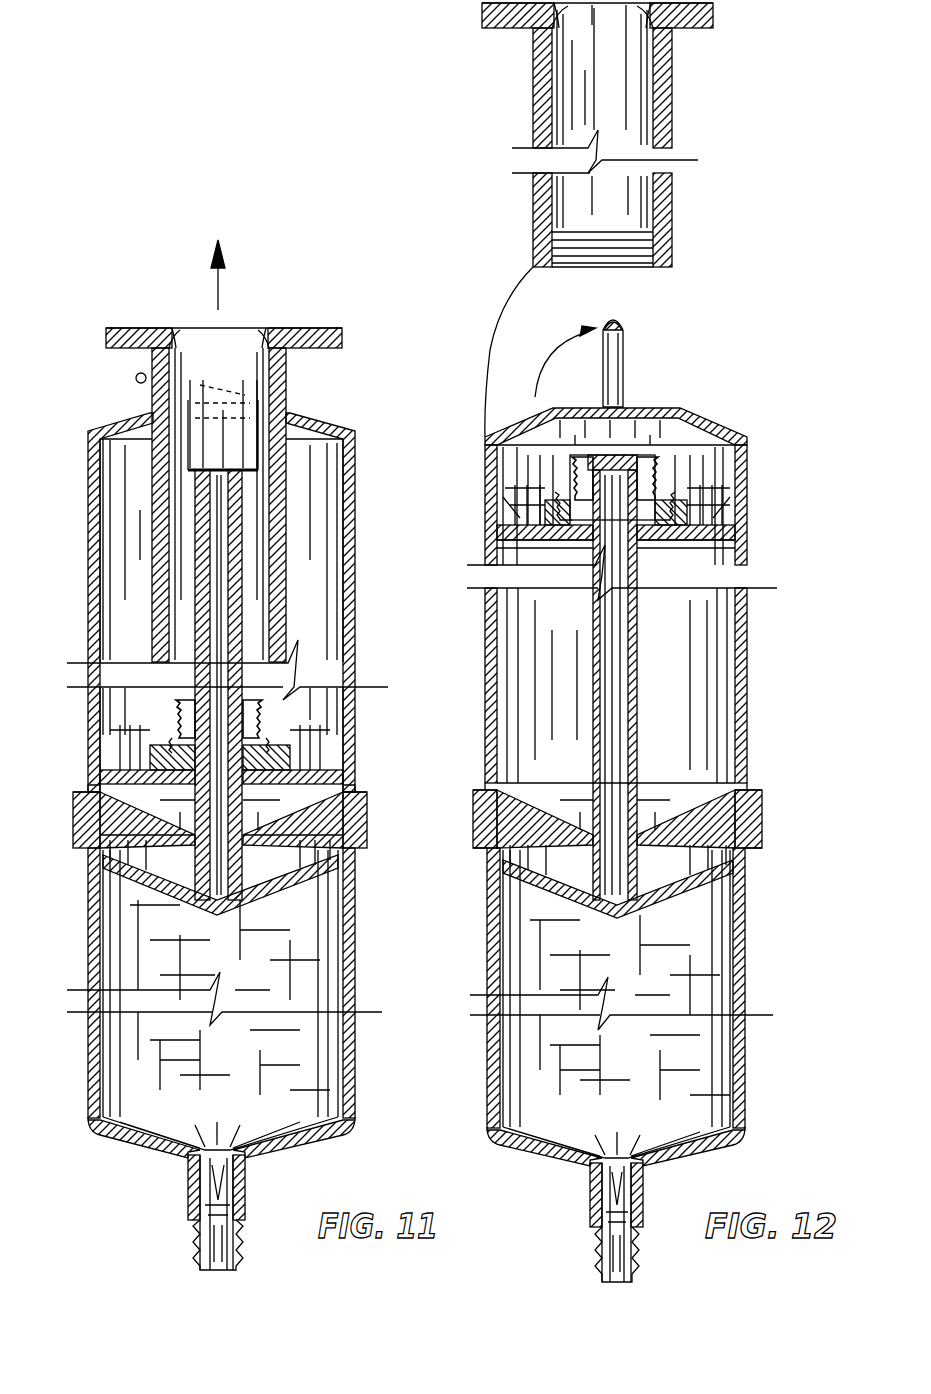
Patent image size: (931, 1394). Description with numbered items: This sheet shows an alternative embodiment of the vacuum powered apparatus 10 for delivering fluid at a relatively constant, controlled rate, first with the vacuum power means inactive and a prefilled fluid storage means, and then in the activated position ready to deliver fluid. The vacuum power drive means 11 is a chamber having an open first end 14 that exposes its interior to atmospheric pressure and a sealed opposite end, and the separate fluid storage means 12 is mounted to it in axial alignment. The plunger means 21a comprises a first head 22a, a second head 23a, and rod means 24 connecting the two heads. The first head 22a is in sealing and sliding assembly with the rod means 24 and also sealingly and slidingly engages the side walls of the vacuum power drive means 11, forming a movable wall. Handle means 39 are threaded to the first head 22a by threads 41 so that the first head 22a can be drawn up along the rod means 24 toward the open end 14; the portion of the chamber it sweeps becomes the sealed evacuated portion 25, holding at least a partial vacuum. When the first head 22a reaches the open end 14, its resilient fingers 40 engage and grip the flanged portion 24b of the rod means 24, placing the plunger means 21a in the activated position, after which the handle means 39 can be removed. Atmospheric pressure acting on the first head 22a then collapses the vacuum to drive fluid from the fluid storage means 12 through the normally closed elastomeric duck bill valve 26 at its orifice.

In FIG. 11, the vacuum powered apparatus 10 is at (90, 413).
In FIG. 12, the vacuum powered apparatus 10 is at (755, 417).
In FIG. 11, the vacuum power drive means 11 is at (356, 568).
In FIG. 12, the vacuum power drive means 11 is at (740, 532).
In FIG. 11, the fluid storage means 12 is at (343, 936).
In FIG. 12, the fluid storage means 12 is at (745, 920).
In FIG. 11, the first end 14 is at (330, 422).
In FIG. 12, the first end 14 is at (702, 422).
In FIG. 11, the plunger means 21a is at (328, 622).
In FIG. 12, the plunger means 21a is at (703, 650).
In FIG. 11, the first head 22a is at (310, 770).
In FIG. 11, the second head 23a is at (338, 832).
In FIG. 12, the second head 23a is at (713, 838).
In FIG. 11, the rod means 24 is at (243, 526).
In FIG. 12, the rod means 24 is at (637, 678).
In FIG. 11, the flanged portion 24b is at (250, 478).
In FIG. 12, the flanged portion 24b is at (562, 478).
In FIG. 12, the sealed evacuated portion 25 is at (680, 716).
In FIG. 11, the duck bill valve 26 is at (243, 1188).
In FIG. 12, the duck bill valve 26 is at (603, 1200).
In FIG. 11, the handle means 39 is at (335, 326).
In FIG. 12, the handle means 39 is at (673, 97).
In FIG. 11, the resilient fingers 40 is at (272, 703).
In FIG. 12, the resilient fingers 40 is at (643, 458).
In FIG. 11, the threads 41 is at (288, 738).
In FIG. 12, the threads 41 is at (682, 497).